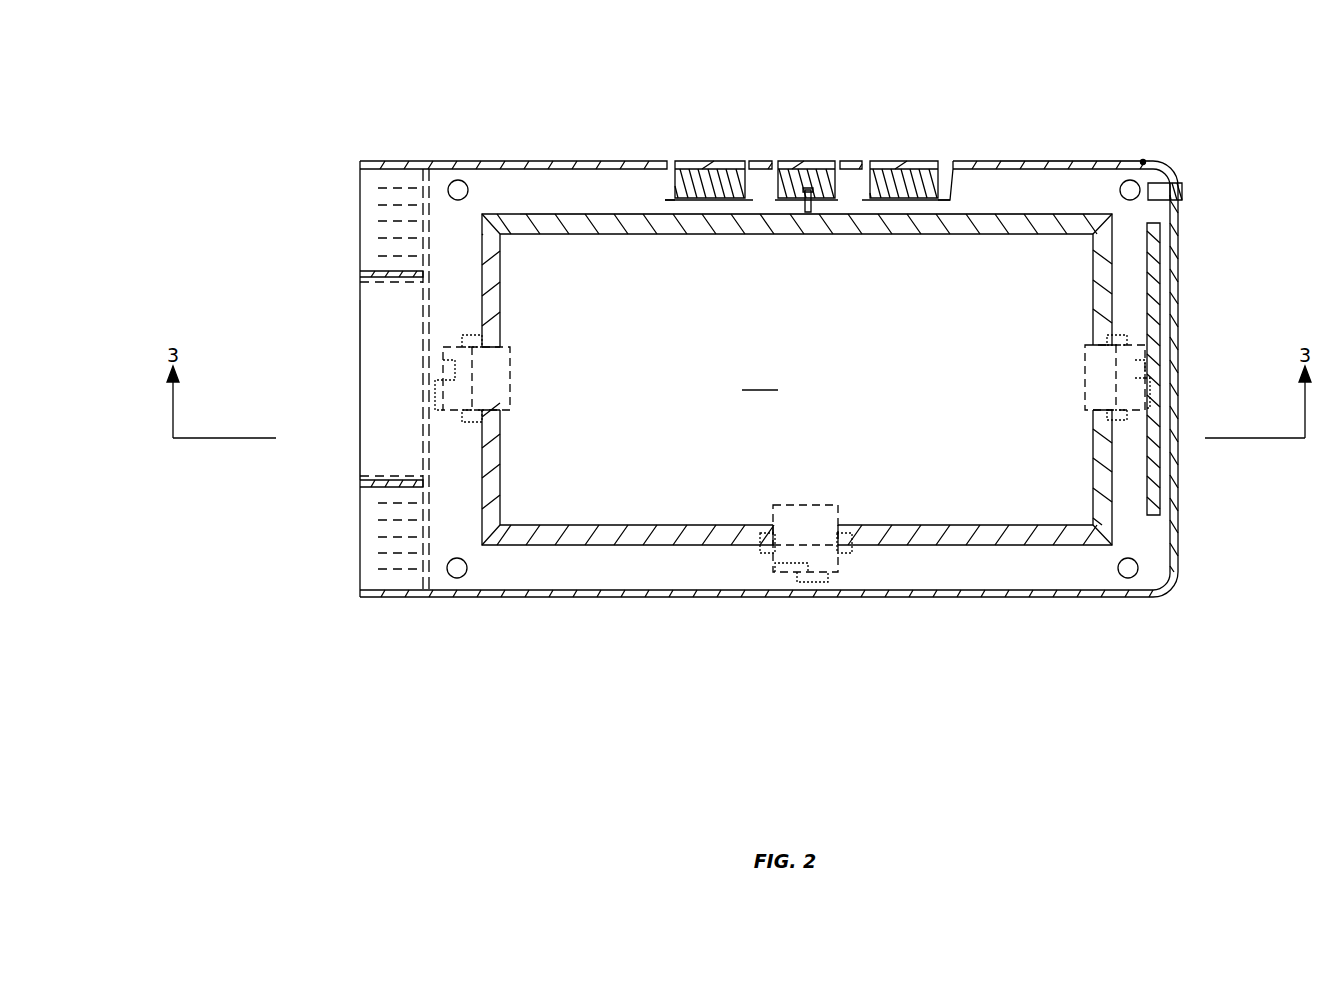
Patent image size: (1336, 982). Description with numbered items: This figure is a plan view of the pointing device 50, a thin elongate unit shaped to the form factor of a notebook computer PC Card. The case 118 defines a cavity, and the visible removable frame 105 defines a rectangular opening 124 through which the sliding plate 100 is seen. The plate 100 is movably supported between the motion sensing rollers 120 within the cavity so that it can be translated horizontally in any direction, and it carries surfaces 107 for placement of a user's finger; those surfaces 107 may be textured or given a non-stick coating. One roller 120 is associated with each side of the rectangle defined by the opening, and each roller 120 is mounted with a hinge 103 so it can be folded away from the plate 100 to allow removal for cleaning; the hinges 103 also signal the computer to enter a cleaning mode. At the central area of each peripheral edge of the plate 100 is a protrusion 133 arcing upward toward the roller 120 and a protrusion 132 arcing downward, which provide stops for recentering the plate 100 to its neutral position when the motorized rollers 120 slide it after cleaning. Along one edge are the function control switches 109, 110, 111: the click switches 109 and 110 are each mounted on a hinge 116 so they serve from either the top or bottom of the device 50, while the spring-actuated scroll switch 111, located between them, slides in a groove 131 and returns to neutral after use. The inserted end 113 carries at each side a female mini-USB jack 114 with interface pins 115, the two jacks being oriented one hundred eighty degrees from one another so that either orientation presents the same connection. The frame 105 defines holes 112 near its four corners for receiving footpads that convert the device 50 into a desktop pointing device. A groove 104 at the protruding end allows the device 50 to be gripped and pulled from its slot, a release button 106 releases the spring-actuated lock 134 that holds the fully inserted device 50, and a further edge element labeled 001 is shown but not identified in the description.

The pointing device 50 is at (1001, 52).
The housing 001 is at (545, 598).
The sliding plate 100 is at (880, 378).
The hinge 103 is at (472, 337).
The groove 104 is at (1162, 290).
The removable frame 105 is at (1066, 190).
The release button 106 is at (1182, 192).
The surface 107 is at (760, 379).
The function control switch 109 is at (905, 160).
The function control switch 110 is at (712, 160).
The scroll switch 111 is at (815, 160).
The hole 112 is at (1140, 183).
The inserted end 113 is at (358, 398).
The female mini-USB jack 114 is at (360, 205).
The interface pin 115 is at (368, 236).
The hinge 116 is at (663, 200).
The case 118 is at (1008, 598).
The upper motion sensing roller 120 is at (488, 390).
The rectangular opening 124 is at (995, 235).
The groove 131 is at (805, 212).
The protrusion 132 is at (437, 397).
The protrusion 133 is at (447, 368).
The spring-actuated lock 134 is at (1143, 162).